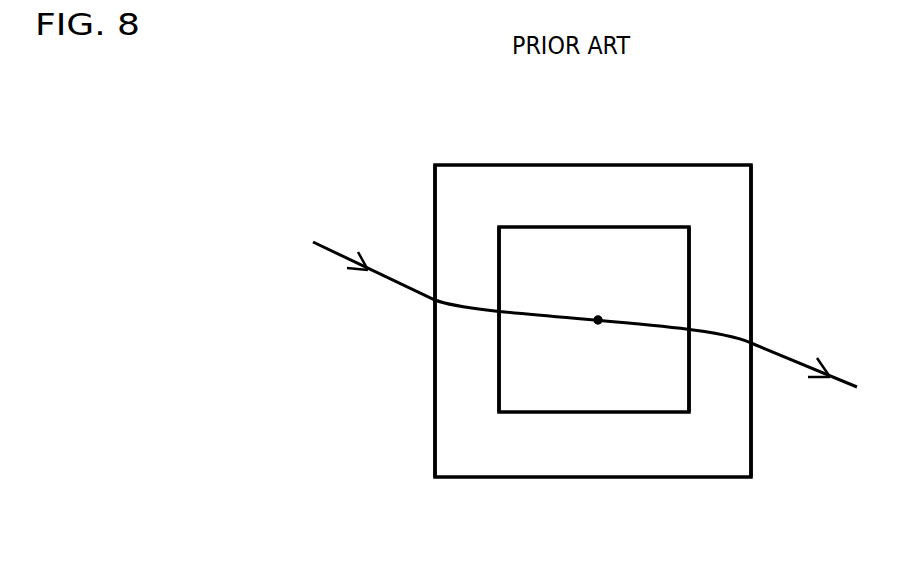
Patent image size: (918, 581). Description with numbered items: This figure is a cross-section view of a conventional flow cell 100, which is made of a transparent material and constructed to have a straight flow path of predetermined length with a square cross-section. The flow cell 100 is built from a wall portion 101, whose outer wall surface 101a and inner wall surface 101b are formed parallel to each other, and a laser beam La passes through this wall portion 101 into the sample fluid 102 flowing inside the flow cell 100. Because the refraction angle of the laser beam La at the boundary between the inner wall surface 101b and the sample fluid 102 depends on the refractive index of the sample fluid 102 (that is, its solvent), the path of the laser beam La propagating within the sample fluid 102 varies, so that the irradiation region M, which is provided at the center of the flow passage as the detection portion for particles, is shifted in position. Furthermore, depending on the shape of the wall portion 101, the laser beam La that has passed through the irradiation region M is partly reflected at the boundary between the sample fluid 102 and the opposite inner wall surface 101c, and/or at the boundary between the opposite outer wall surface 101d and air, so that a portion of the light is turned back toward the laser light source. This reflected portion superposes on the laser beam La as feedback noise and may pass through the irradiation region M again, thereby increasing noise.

The flow cell 100 is at (605, 293).
The wall portion 101 is at (605, 293).
The outer wall surface 101a is at (435, 352).
The inner wall surface 101b is at (499, 380).
The inner wall surface 101c is at (689, 378).
The outer wall surface 101d is at (751, 197).
The sample fluid 102 is at (656, 393).
The laser beam La is at (331, 248).
The irradiation region M is at (598, 322).